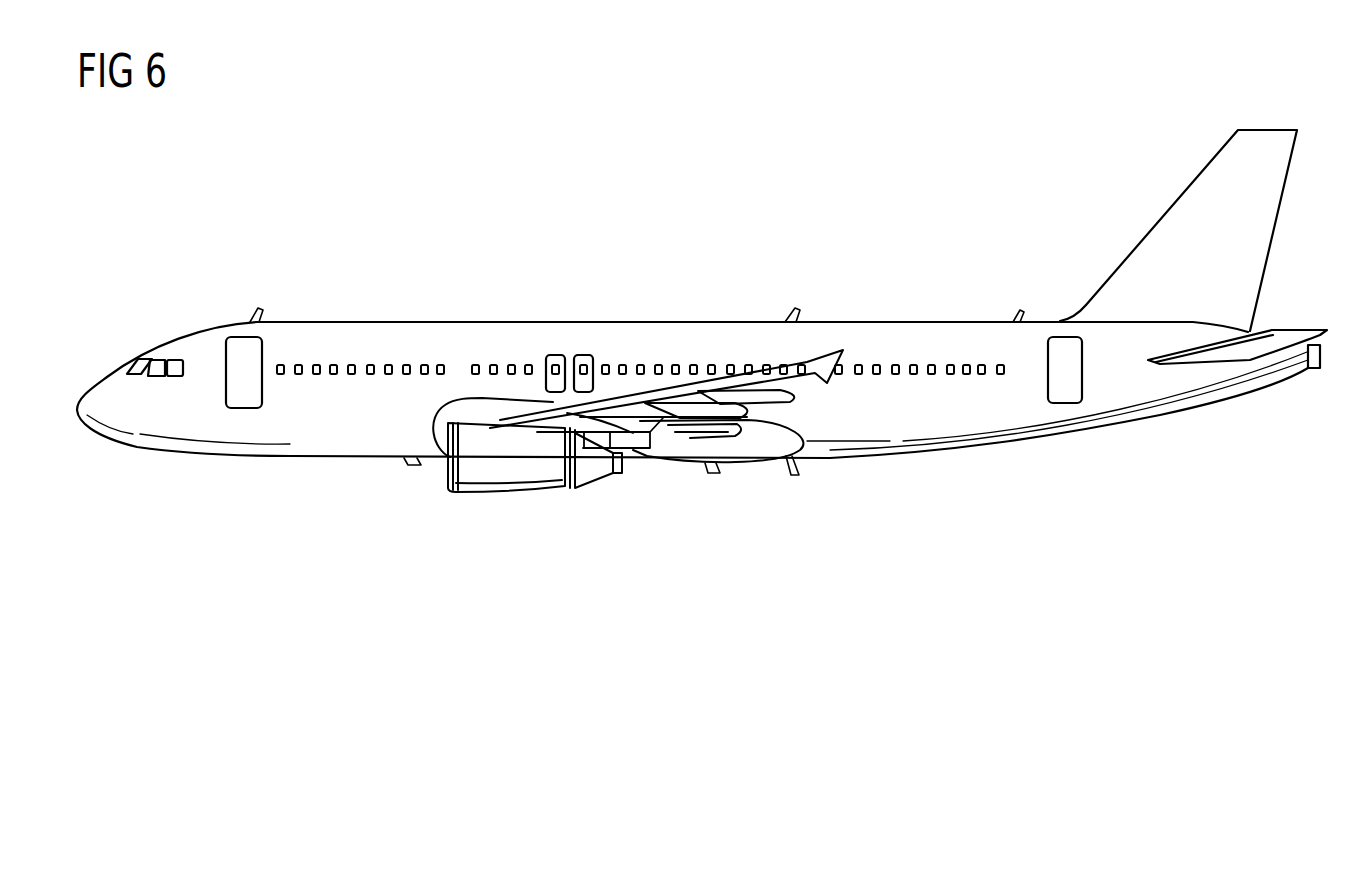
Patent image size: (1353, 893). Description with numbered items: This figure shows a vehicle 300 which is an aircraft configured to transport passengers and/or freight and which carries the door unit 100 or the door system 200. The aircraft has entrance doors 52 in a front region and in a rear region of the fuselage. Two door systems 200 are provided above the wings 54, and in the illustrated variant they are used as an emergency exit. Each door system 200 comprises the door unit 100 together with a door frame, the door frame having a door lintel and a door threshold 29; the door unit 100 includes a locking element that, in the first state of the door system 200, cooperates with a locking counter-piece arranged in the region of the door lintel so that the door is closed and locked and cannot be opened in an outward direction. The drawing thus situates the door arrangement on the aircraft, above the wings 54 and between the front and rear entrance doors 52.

The vehicle 300 is at (788, 192).
The entrance door 52 is at (238, 348).
The door unit 100 is at (552, 353).
The door system 200 is at (557, 340).
The door threshold 29 is at (552, 393).
The wing 54 is at (640, 409).